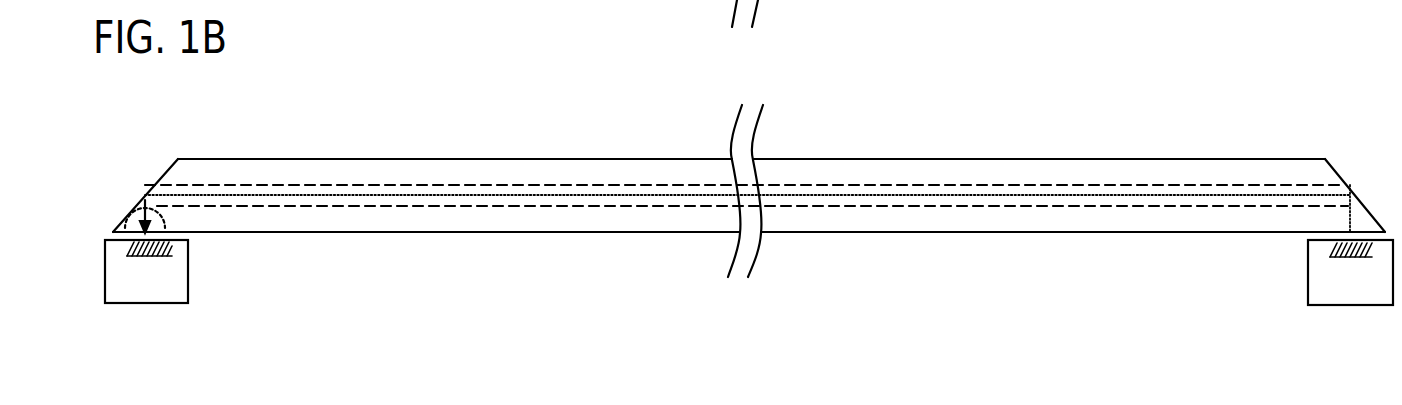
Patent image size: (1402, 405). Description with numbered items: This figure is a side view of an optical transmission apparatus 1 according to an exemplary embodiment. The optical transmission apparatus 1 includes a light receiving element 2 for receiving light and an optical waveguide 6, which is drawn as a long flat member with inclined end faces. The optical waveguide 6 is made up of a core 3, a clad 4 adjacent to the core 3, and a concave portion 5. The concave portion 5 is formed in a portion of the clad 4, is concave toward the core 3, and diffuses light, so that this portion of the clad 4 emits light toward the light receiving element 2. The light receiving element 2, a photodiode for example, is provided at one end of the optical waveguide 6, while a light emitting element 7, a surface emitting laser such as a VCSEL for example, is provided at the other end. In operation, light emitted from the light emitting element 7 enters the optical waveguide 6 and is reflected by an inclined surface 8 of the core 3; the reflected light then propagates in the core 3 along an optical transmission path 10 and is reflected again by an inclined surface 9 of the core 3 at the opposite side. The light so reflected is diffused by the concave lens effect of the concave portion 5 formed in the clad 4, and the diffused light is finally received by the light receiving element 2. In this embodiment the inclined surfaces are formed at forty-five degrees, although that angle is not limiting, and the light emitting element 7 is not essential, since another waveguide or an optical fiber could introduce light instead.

The optical transmission apparatus 1 is at (825, 107).
The light receiving element 2 is at (188, 282).
The core 3 is at (455, 185).
The clad 4 is at (522, 0).
The concave portion 5 is at (160, 222).
The optical waveguide 6 is at (1150, 128).
The light emitting element 7 is at (1308, 265).
The inclined surface 8 is at (1347, 193).
The inclined surface 9 is at (152, 190).
The optical transmission path 10 is at (888, 200).